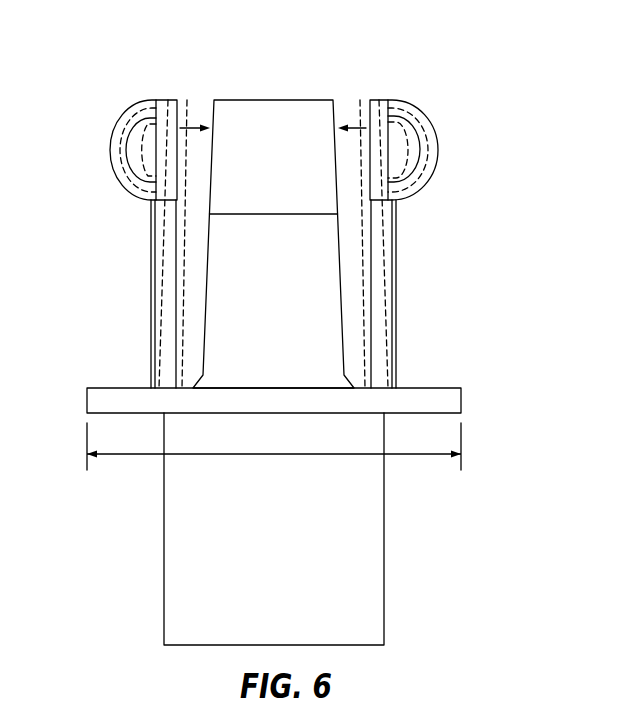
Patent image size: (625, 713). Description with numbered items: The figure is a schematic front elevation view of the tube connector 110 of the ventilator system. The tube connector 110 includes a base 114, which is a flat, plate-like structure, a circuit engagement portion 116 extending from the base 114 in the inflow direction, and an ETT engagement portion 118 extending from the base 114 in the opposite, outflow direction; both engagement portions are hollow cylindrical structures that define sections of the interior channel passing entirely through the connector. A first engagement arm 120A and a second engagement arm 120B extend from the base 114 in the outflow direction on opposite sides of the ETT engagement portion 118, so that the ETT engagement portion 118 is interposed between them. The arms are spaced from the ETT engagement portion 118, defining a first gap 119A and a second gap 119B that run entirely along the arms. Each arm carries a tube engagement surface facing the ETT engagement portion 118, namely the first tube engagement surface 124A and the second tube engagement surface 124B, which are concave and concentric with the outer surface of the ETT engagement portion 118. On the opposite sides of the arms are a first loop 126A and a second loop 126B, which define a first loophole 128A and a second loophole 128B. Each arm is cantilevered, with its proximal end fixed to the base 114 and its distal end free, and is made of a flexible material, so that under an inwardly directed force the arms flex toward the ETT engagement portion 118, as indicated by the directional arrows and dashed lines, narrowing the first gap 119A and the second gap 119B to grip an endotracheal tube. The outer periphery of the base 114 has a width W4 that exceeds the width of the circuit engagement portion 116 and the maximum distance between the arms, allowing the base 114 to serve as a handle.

The tube connector 110 is at (490, 38).
The base 114 is at (441, 396).
The circuit engagement portion 116 is at (357, 572).
The ETT engagement portion 118 is at (305, 105).
The first gap 119A is at (343, 104).
The second gap 119B is at (192, 292).
The first engagement arm 120A is at (395, 252).
The second engagement arm 120B is at (146, 283).
The first tube engagement surface 124A is at (368, 110).
The second tube engagement surface 124B is at (178, 100).
The first loop 126A is at (433, 148).
The second loop 126B is at (117, 141).
The first loophole 128A is at (401, 131).
The second loophole 128B is at (149, 128).
The width of the outer periphery of the base W4 is at (427, 457).